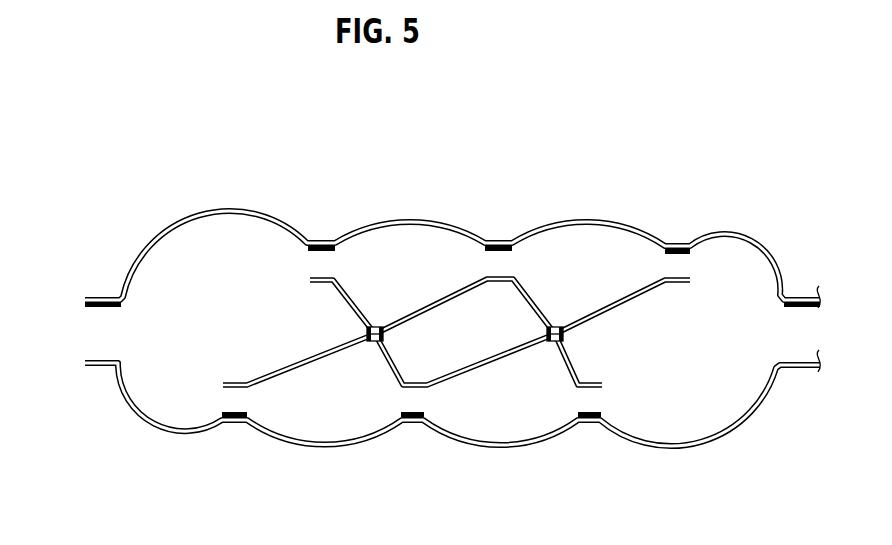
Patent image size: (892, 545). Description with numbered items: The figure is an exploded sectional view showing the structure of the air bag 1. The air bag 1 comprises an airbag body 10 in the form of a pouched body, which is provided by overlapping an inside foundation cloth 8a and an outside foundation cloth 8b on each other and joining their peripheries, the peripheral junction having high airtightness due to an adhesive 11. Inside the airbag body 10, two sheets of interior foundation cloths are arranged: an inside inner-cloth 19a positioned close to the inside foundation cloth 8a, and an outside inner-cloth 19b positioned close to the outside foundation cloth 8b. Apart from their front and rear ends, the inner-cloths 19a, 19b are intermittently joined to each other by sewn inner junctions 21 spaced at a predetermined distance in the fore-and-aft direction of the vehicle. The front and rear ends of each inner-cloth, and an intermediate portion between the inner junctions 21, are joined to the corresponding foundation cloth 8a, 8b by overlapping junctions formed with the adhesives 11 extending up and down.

The air bag 1 is at (460, 160).
The airbag body 10 is at (180, 145).
The inside foundation cloth 8a is at (142, 400).
The outside foundation cloth 8b is at (198, 212).
The adhesive 11 is at (107, 304).
The inside inner-cloth 19a is at (303, 367).
The outside inner-cloth 19b is at (637, 288).
The inner junction 21 is at (368, 338).